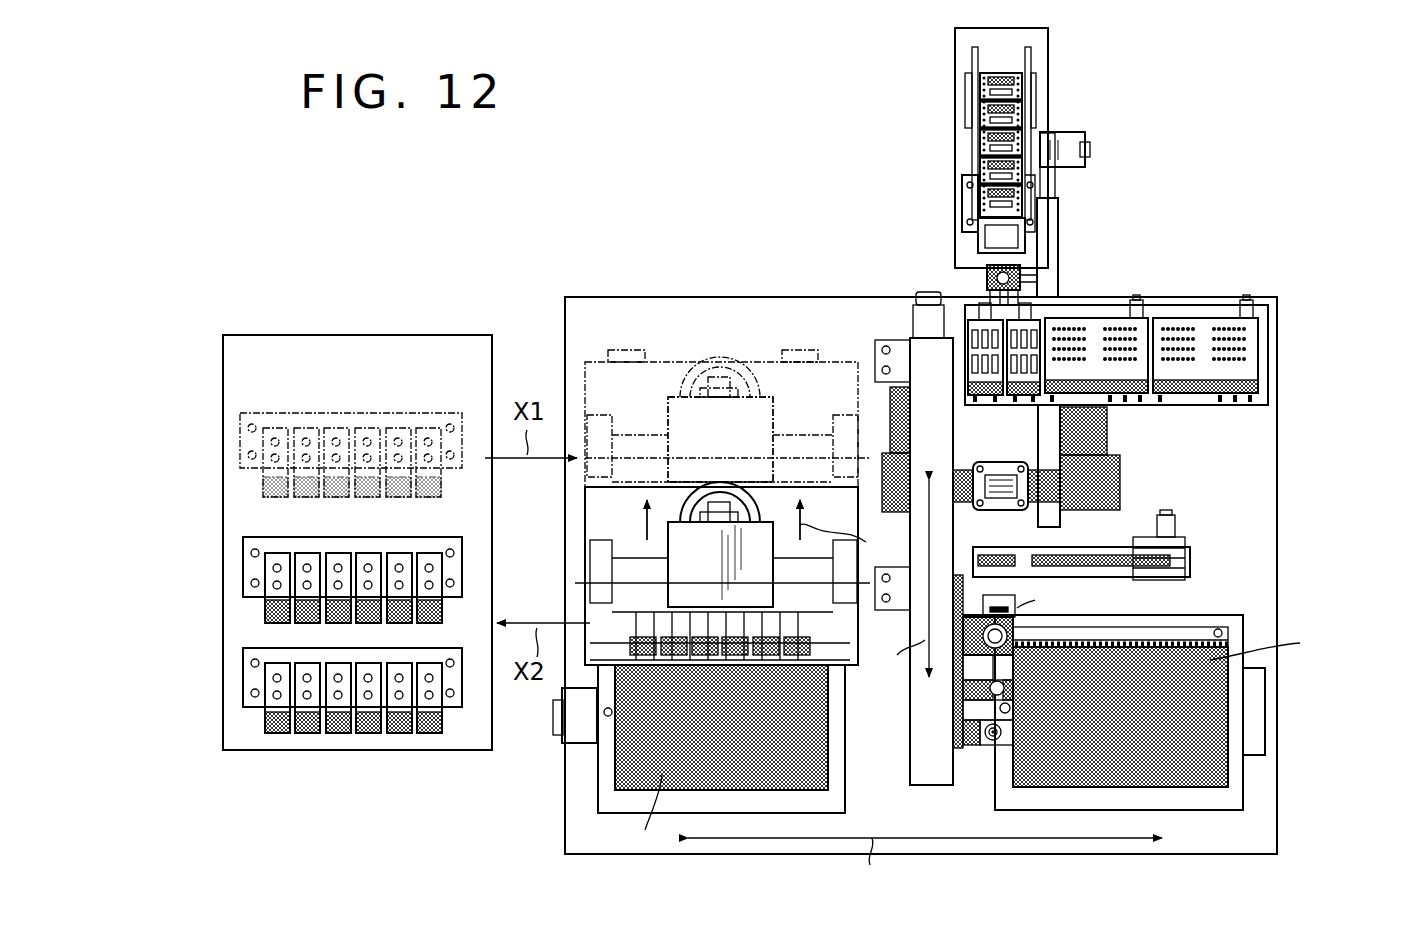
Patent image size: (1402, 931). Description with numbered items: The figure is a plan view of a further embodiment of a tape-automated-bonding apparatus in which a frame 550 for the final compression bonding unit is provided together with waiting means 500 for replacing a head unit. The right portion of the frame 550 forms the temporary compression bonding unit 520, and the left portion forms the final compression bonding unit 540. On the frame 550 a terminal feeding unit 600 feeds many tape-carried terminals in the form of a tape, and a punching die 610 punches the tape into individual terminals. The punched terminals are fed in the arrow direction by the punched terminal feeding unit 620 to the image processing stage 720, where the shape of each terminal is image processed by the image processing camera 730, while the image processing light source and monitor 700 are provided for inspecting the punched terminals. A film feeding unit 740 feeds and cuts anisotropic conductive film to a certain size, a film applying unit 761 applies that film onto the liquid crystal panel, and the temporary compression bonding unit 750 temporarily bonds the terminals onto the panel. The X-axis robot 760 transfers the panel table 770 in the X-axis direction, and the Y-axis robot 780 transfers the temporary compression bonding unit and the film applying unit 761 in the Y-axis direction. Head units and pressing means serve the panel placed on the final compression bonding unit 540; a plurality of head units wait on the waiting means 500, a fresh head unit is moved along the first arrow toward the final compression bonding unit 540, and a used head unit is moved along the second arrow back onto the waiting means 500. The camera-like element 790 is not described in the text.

The waiting means 500 is at (324, 581).
The temporary compression bonding unit 520 is at (900, 573).
The final compression bonding unit 540 is at (632, 866).
The frame 550 is at (651, 582).
The TAB terminal feeding unit 600 is at (960, 135).
The TAB punching die 610 is at (967, 208).
The punched TAB feeding unit 620 is at (1020, 280).
The image processing light source and monitor 700 is at (1033, 330).
The TAB image processing stage 720 is at (993, 462).
The image processing camera 730 is at (1125, 470).
The ACF feeding unit 740 is at (1095, 540).
The TAB temporary compression bonding unit 750 is at (1023, 637).
The X-axis robot 760 is at (1252, 693).
The ACF applying unit 761 is at (1015, 697).
The LCD table 770 is at (1240, 780).
The Y-axis robot 780 is at (930, 770).
The camera 790 is at (993, 745).